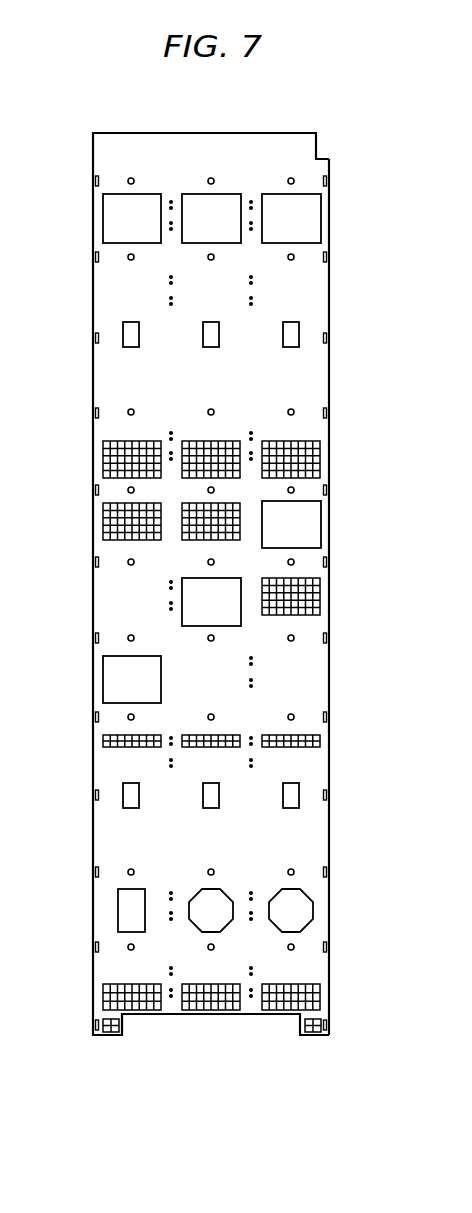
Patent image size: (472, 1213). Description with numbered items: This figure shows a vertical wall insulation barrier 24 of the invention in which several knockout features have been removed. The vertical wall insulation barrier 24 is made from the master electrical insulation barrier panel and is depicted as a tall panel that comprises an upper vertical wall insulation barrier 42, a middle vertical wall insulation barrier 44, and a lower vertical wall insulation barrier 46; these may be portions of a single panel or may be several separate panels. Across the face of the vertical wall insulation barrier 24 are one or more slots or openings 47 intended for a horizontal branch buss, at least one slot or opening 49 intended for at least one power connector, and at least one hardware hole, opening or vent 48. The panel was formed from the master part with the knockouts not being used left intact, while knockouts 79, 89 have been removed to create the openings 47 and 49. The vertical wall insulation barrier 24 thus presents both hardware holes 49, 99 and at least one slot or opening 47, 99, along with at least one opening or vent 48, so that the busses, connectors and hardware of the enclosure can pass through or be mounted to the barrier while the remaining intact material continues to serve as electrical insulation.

The vertical wall insulation barrier 24 is at (210, 133).
The upper vertical wall insulation barrier 42 is at (322, 233).
The middle vertical wall insulation barrier 44 is at (315, 598).
The lower vertical wall insulation barrier 46 is at (322, 890).
The slot or opening 47 is at (299, 335).
The hardware hole, opening or vent 48 is at (294, 717).
The slot or opening 49 is at (312, 523).
The knockout 79 is at (112, 218).
The knockout 89 is at (311, 220).
The hardware hole or slot or opening 99 is at (120, 680).